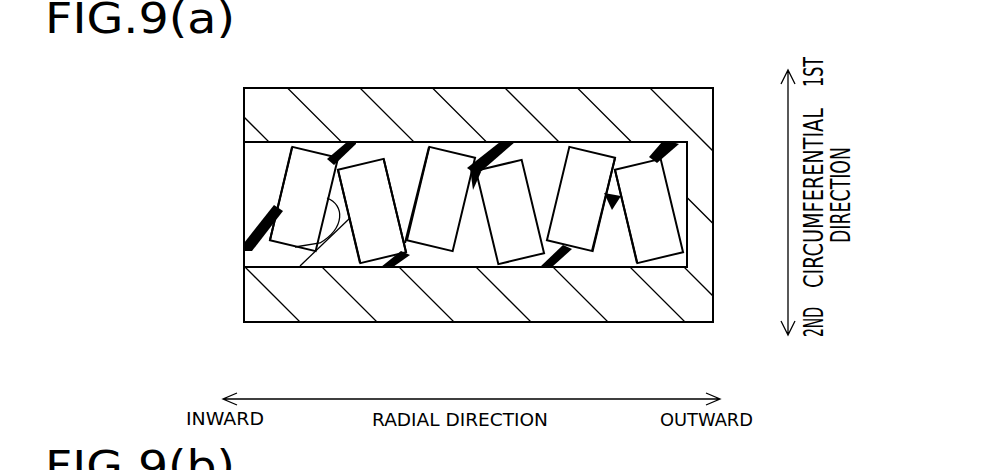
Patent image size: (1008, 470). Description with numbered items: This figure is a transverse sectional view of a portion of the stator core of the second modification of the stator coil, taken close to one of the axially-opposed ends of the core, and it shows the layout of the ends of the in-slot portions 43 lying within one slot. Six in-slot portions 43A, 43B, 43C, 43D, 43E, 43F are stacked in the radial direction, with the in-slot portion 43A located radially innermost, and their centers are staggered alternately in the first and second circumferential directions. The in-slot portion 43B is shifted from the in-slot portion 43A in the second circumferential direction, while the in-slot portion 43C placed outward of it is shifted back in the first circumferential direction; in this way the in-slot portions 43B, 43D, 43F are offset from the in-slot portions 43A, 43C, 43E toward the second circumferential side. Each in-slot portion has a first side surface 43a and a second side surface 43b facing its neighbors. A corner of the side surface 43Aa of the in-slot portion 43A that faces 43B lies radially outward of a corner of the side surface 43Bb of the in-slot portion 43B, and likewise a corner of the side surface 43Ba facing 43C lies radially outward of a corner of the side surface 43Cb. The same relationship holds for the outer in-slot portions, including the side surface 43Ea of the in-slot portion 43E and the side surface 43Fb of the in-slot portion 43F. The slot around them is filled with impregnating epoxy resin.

The in-slot portions 43 is at (433, 268).
The in-slot portion 43A is at (295, 202).
The in-slot portion 43B is at (385, 232).
The in-slot portion 43C is at (437, 232).
The in-slot portion 43D is at (530, 248).
The in-slot portion 43E is at (567, 233).
The in-slot portion 43F is at (650, 219).
The side surface 43a is at (393, 219).
The side surface 43b is at (513, 217).
The side surface of in-slot portion 43A 43Aa is at (270, 242).
The side surface of in-slot portion 43B 43Ba is at (387, 178).
The side surface of in-slot portion 43E 43Ea is at (592, 247).
The side surface of in-slot portion 43B 43Bb is at (350, 218).
The side surface of in-slot portion 43C 43Cb is at (388, 180).
The side surface of in-slot portion 43F 43Fb is at (633, 245).